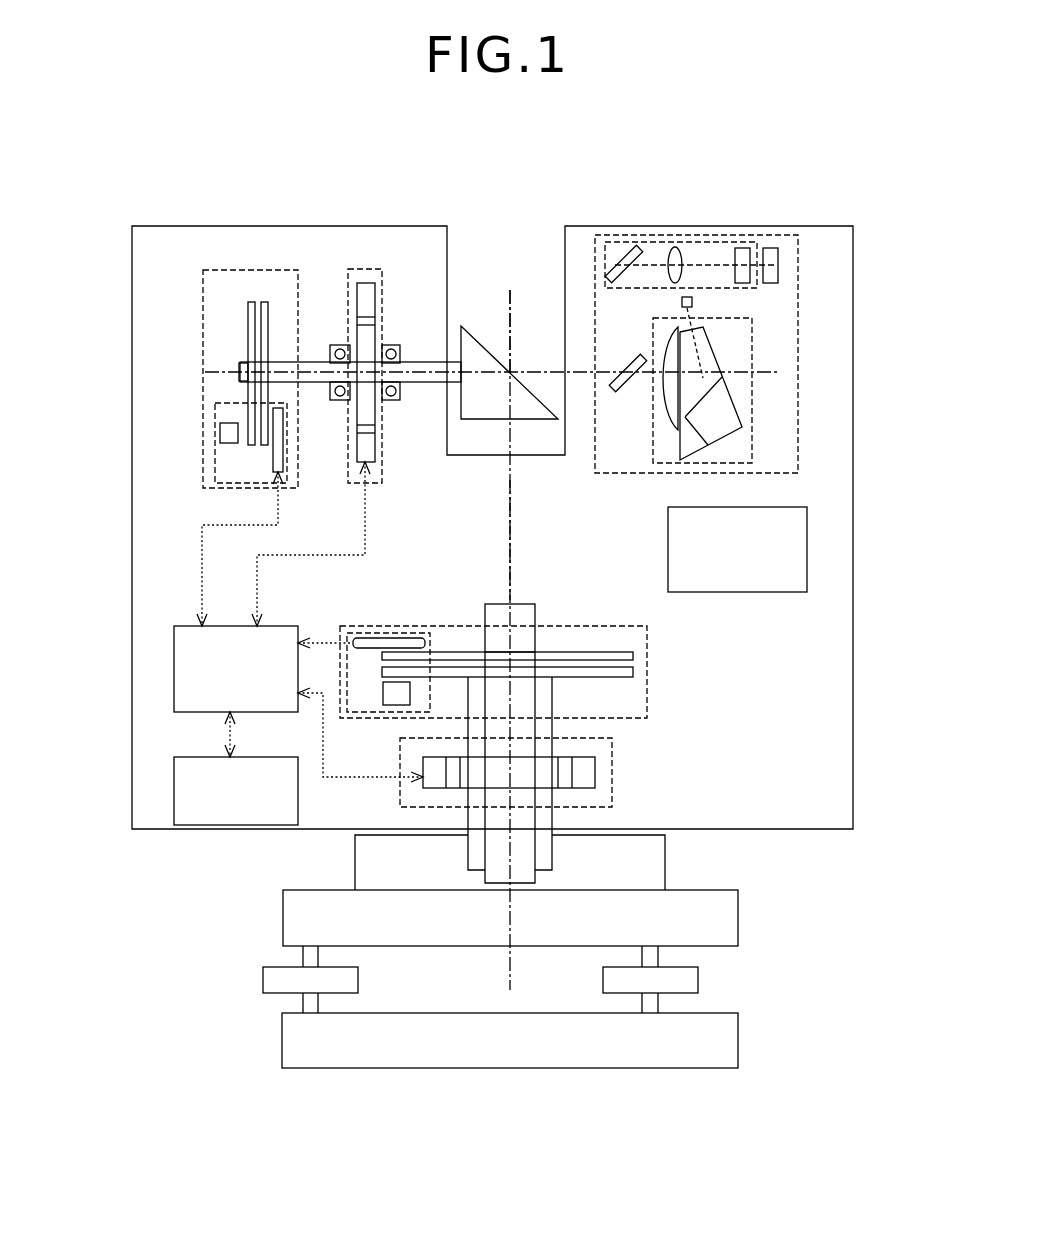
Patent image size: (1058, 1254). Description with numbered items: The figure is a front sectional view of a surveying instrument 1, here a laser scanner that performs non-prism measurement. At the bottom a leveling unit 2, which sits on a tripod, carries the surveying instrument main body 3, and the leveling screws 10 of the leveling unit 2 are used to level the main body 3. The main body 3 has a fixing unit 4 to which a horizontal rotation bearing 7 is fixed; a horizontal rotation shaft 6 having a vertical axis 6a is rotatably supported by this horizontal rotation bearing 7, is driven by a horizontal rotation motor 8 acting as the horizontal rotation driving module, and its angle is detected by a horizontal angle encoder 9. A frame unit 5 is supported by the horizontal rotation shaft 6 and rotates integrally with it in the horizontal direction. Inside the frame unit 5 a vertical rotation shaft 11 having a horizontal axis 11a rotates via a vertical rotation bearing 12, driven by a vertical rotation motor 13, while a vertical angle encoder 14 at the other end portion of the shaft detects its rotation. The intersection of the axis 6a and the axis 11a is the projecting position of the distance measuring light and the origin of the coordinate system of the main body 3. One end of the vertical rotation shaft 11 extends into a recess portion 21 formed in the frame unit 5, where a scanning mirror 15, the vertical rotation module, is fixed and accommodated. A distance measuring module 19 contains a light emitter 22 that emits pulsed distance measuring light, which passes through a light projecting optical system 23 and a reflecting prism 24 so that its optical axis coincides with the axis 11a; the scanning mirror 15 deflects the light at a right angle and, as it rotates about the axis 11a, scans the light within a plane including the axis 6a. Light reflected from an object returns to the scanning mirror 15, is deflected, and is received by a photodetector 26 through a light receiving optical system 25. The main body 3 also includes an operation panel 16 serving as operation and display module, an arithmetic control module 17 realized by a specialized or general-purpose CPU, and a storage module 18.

The surveying instrument 1 is at (88, 180).
The leveling unit 2 is at (283, 913).
The surveying instrument main body 3 is at (855, 320).
The fixing unit 4 is at (665, 860).
The frame unit 5 is at (132, 445).
The horizontal rotation shaft 6 is at (535, 638).
The vertical axis 6a is at (505, 545).
The horizontal rotation bearing 7 is at (552, 850).
The horizontal rotation motor 8 is at (612, 773).
The horizontal angle encoder 9 is at (647, 645).
The leveling screws 10 is at (263, 978).
The vertical rotation shaft 11 is at (418, 383).
The horizontal axis 11a is at (228, 371).
The vertical rotation bearing 12 is at (392, 345).
The vertical rotation motor 13 is at (360, 269).
The vertical angle encoder 14 is at (232, 270).
The scanning mirror 15 is at (461, 326).
The operation panel 16 is at (807, 533).
The arithmetic control module 17 is at (174, 668).
The storage module 18 is at (174, 780).
The distance measuring module 19 is at (680, 235).
The recess portion 21 is at (490, 278).
The light emitter 22 is at (778, 255).
The light projecting optical system 23 is at (600, 255).
The reflecting prism 24 is at (625, 397).
The light receiving optical system 25 is at (687, 465).
The photodetector 26 is at (692, 302).